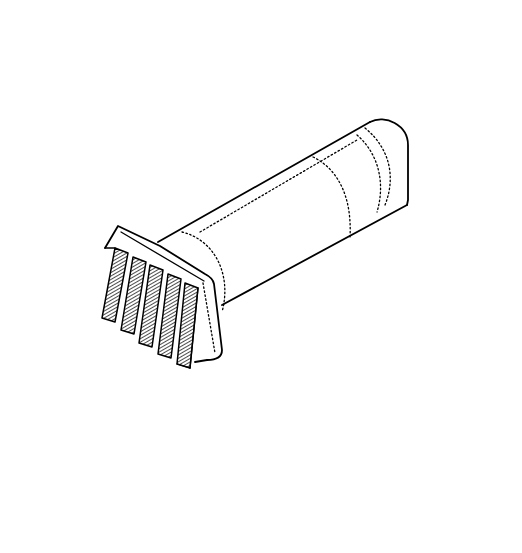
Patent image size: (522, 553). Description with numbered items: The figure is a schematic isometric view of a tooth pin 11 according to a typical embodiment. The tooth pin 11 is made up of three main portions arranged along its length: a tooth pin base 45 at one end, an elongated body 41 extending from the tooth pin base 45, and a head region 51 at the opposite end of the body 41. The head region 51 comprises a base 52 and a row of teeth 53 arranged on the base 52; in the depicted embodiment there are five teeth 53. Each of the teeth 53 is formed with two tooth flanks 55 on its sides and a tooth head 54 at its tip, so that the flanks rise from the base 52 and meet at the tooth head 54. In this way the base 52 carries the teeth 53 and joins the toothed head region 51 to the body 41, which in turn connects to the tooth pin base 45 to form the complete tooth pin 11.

The tooth pin 11 is at (88, 101).
The body 41 is at (245, 190).
The tooth pin base 45 is at (410, 172).
The head region 51 is at (86, 223).
The base 52 is at (118, 226).
The teeth 53 is at (178, 370).
The tooth head 54 is at (173, 362).
The tooth flanks 55 is at (183, 367).